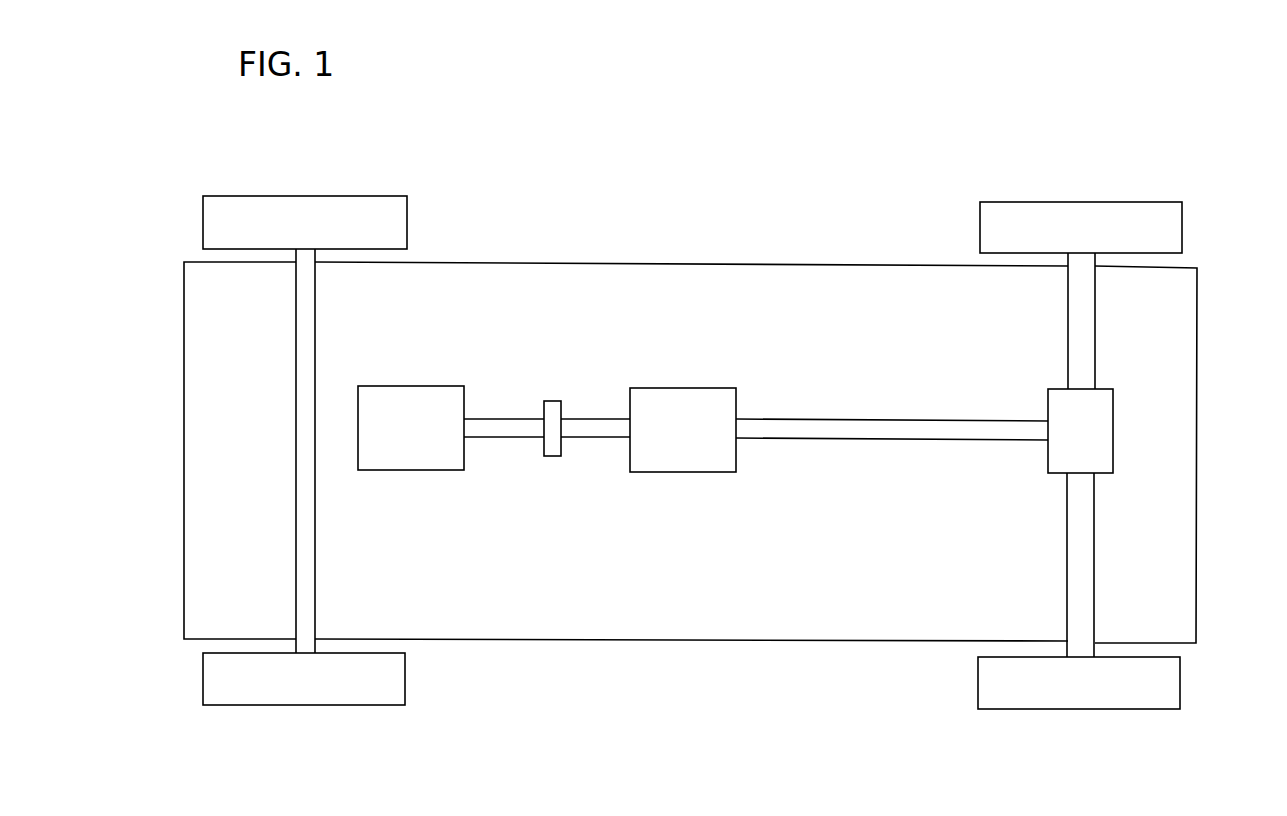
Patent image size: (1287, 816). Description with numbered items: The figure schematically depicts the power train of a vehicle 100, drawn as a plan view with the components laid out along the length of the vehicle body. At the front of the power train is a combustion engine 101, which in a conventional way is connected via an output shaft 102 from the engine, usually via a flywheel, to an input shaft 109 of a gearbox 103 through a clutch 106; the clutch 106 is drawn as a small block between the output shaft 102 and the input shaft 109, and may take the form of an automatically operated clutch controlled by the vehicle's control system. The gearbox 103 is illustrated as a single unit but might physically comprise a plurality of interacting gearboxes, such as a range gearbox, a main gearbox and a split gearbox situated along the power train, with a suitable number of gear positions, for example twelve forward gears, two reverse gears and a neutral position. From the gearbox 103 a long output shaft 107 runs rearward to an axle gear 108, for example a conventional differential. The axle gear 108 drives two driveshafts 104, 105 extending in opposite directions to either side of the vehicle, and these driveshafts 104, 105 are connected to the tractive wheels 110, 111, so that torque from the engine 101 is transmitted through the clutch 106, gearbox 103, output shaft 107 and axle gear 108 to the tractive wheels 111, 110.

The vehicle 100 is at (597, 104).
The combustion engine 101 is at (387, 462).
The output shaft 102 is at (485, 425).
The gearbox 103 is at (684, 396).
The driveshaft 104 is at (1085, 319).
The driveshaft 105 is at (1089, 573).
The clutch 106 is at (551, 448).
The output shaft 107 is at (975, 435).
The axle gear 108 is at (1106, 425).
The input shaft 109 is at (583, 425).
The tractive wheel 110 is at (1178, 686).
The tractive wheel 111 is at (1180, 221).